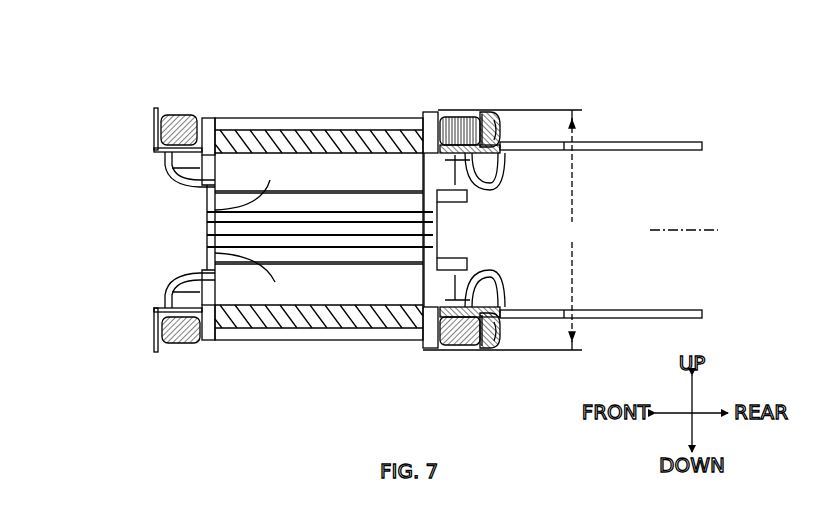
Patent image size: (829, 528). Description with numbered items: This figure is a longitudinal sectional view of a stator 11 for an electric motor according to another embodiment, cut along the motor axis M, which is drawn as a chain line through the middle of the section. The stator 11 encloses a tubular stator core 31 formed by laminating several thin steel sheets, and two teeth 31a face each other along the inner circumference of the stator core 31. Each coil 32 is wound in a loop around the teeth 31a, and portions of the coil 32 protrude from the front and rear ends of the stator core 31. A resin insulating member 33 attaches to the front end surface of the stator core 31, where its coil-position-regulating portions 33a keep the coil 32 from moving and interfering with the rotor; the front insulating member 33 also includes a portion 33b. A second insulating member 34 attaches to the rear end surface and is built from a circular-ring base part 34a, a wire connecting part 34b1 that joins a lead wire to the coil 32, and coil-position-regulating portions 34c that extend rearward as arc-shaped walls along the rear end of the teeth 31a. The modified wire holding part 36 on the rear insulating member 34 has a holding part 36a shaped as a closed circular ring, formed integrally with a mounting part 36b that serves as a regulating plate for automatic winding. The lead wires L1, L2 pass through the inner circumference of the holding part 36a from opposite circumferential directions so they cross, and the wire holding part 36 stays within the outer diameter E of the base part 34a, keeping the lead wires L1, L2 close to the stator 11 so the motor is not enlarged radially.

The stator 11 is at (349, 108).
The stator core 31 is at (297, 130).
The teeth 31a is at (207, 207).
The coil 32 is at (185, 113).
The insulating member 33 is at (210, 112).
The coil-position-regulating portion 33a is at (195, 168).
The insulator plate portion 33b is at (155, 120).
The insulating member 34 is at (430, 110).
The base part 34a is at (430, 350).
The wire connecting part 34b1 is at (455, 197).
The coil-position-regulating portion 34c is at (490, 152).
The wire holding part 36 is at (495, 110).
The holding part 36a is at (500, 133).
The mounting part 36b is at (483, 112).
The lead wire L1 is at (500, 183).
The lead wire L2 is at (672, 142).
The outer diameter E is at (573, 230).
The motor axis M is at (693, 232).